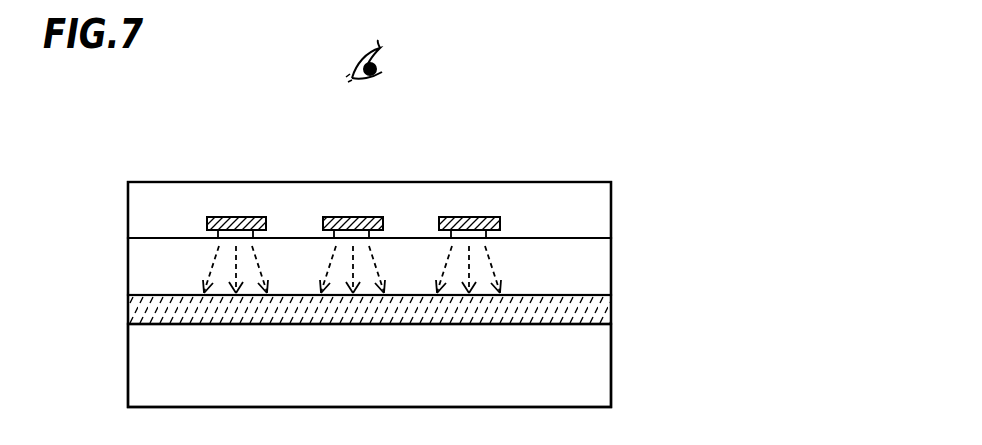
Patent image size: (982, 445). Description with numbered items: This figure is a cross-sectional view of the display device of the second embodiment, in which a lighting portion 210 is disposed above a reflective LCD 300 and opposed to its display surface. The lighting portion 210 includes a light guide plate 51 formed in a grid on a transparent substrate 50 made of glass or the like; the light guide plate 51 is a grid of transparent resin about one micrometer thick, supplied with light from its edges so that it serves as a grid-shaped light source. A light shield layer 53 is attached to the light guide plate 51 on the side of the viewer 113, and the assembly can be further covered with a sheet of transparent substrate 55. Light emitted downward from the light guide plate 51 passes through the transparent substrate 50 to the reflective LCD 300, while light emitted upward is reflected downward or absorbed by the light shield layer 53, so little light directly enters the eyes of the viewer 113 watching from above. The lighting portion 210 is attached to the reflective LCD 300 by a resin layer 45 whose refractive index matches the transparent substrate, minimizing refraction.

The viewer 113 is at (397, 64).
The lighting portion 210 is at (624, 152).
The transparent substrate 55 is at (600, 211).
The transparent substrate 50 is at (600, 271).
The resin layer 45 is at (600, 315).
The reflective LCD 300 is at (600, 371).
The light shield layer 53 is at (226, 216).
The light guide plate 51 is at (244, 227).